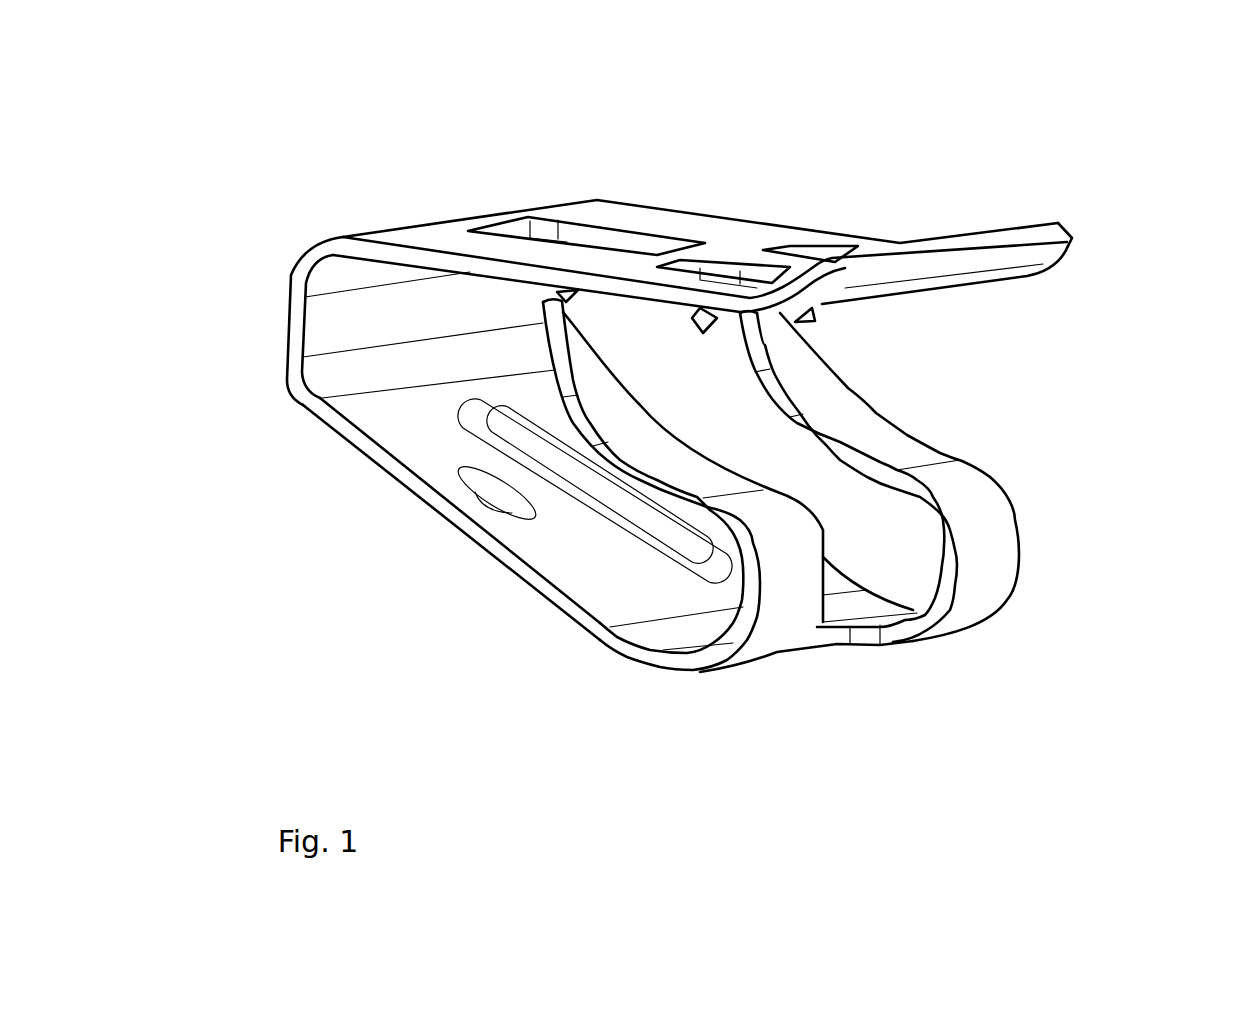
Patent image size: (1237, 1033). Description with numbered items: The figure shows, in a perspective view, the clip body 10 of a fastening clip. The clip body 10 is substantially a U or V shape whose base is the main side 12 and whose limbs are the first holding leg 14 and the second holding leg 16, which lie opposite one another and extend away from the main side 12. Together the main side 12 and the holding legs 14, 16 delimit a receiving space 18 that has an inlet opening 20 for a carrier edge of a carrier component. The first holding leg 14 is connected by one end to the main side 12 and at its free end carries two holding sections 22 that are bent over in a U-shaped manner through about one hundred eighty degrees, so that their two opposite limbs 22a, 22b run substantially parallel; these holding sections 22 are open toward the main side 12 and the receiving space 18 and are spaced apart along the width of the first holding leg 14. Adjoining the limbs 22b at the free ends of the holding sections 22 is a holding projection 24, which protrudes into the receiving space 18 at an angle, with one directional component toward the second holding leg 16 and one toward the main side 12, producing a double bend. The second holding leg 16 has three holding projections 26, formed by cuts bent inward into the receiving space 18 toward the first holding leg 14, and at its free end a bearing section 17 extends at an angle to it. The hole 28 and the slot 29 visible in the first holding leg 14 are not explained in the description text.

The clip body 10 is at (700, 420).
The main side 12 is at (572, 317).
The first holding leg 14 is at (607, 546).
The second holding leg 16 is at (708, 197).
The bearing section 17 is at (958, 245).
The receiving space 18 is at (673, 393).
The inlet opening 20 is at (880, 541).
The holding sections 22 is at (858, 541).
The limb 22a is at (668, 660).
The limb 22b is at (682, 500).
The holding projection 24 is at (573, 362).
The holding projections 26 is at (633, 255).
The hole 28 is at (487, 500).
The slot 29 is at (543, 440).